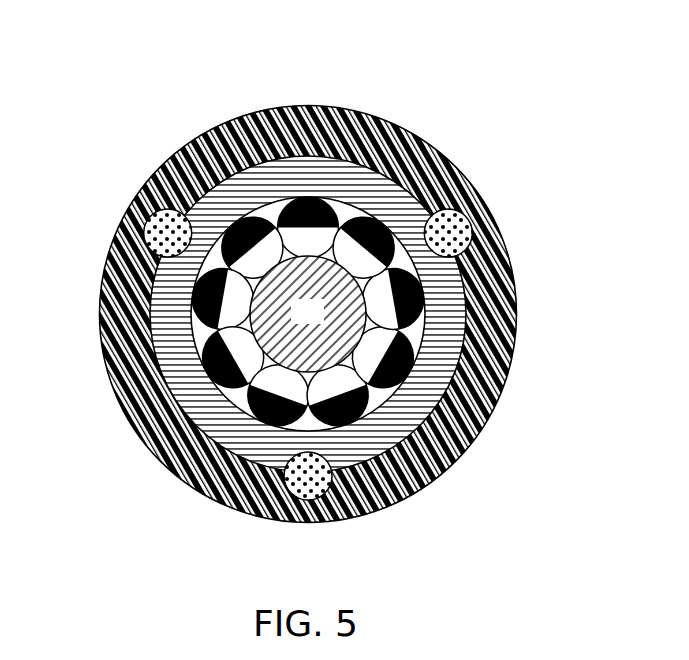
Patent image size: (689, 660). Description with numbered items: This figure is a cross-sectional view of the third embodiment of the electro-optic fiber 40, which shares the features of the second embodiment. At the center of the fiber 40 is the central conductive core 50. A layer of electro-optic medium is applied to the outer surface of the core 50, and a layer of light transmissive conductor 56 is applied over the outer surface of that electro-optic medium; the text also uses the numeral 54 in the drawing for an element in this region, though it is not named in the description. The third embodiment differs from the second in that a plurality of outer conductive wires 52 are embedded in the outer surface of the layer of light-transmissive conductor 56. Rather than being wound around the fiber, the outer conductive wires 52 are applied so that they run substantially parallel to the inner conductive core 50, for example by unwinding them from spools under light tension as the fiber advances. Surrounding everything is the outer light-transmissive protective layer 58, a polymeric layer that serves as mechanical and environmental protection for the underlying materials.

The electro-optic fiber 40 is at (157, 118).
The central conductive core 50 is at (312, 314).
The outer conductive wires 52 is at (470, 196).
The optical fiber units 54 is at (372, 230).
The layer of light transmissive conductor 56 is at (362, 152).
The outer light-transmissive protective layer 58 is at (290, 97).